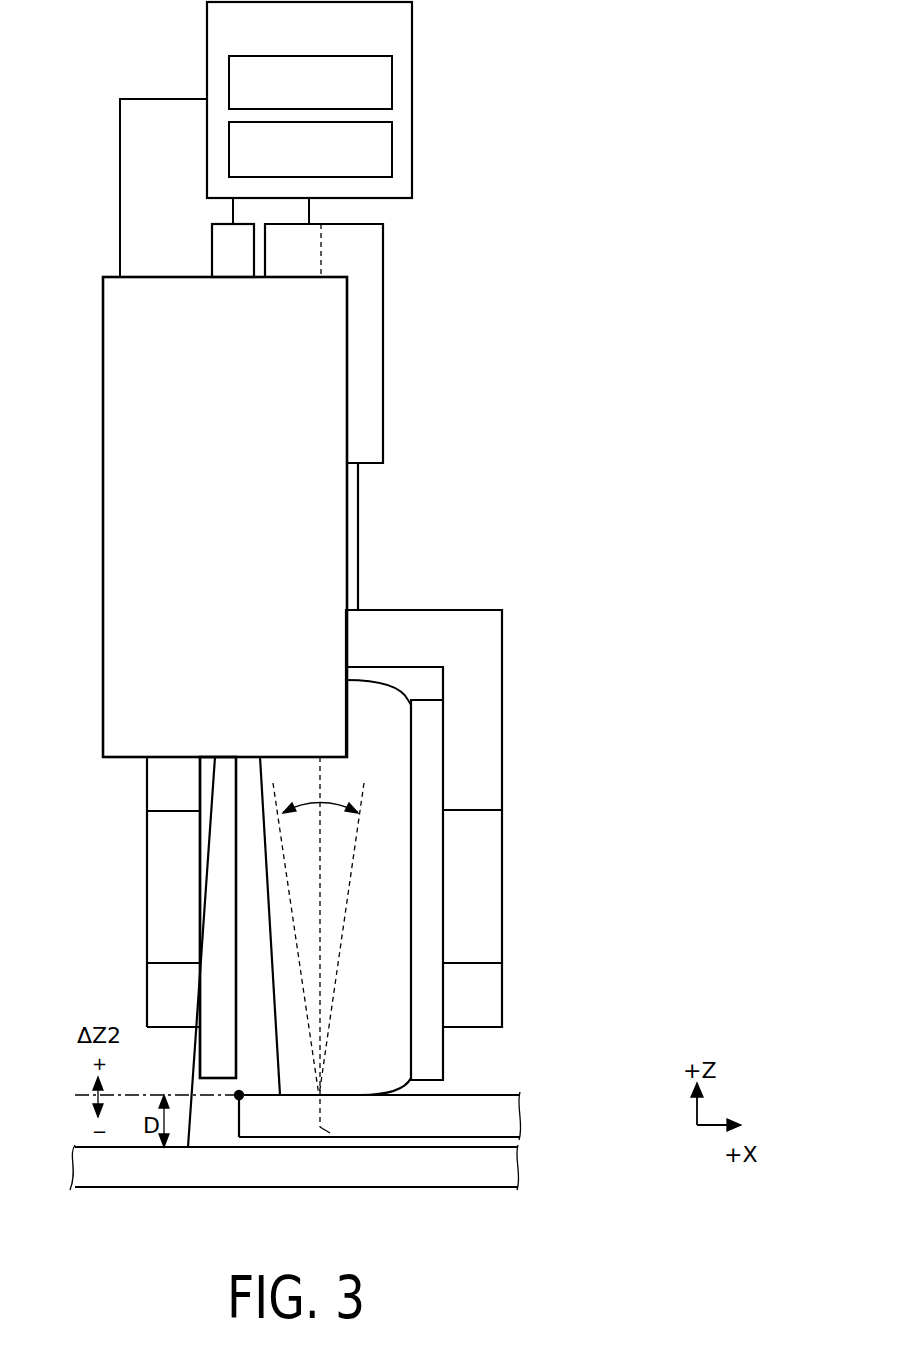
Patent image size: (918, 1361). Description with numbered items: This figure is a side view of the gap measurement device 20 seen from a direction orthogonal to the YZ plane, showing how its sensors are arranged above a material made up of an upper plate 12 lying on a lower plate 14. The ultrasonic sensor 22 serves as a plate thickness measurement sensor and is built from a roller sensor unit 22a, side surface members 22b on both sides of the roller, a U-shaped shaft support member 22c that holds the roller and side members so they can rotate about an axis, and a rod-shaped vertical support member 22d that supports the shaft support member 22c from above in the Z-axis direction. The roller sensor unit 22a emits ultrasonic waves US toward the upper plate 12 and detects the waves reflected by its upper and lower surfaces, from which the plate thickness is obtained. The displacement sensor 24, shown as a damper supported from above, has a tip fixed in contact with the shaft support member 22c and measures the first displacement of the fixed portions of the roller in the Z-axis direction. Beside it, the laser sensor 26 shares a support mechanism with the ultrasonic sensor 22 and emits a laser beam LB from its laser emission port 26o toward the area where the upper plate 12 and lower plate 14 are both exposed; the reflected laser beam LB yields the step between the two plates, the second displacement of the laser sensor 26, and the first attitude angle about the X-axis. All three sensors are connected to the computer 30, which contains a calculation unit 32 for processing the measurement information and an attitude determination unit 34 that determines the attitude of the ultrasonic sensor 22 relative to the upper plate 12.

The upper plate 12 is at (512, 1115).
The lower plate 14 is at (512, 1165).
The gap measurement device 20 is at (313, 623).
The ultrasonic sensor 22 is at (424, 675).
The roller sensor unit 22a is at (388, 990).
The side surface members 22b is at (427, 1050).
The shaft support member 22c is at (488, 711).
The vertical support member 22d is at (368, 343).
The displacement sensor 24 is at (227, 243).
The laser sensor 26 is at (120, 503).
The laser emission port 26o is at (237, 760).
The computer 30 is at (343, 100).
The calculation unit 32 is at (392, 80).
The attitude determination unit 34 is at (392, 148).
The laser beam LB is at (250, 907).
The ultrasonic waves US is at (338, 1142).